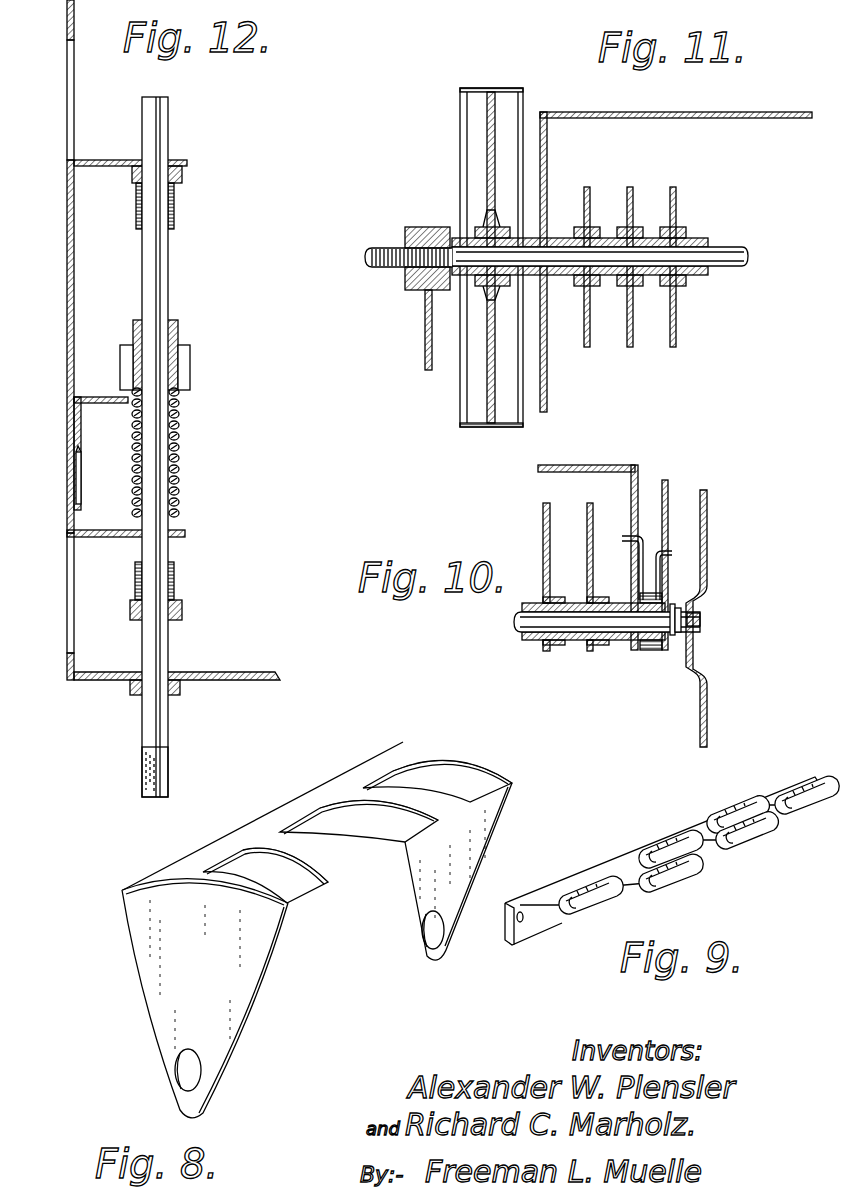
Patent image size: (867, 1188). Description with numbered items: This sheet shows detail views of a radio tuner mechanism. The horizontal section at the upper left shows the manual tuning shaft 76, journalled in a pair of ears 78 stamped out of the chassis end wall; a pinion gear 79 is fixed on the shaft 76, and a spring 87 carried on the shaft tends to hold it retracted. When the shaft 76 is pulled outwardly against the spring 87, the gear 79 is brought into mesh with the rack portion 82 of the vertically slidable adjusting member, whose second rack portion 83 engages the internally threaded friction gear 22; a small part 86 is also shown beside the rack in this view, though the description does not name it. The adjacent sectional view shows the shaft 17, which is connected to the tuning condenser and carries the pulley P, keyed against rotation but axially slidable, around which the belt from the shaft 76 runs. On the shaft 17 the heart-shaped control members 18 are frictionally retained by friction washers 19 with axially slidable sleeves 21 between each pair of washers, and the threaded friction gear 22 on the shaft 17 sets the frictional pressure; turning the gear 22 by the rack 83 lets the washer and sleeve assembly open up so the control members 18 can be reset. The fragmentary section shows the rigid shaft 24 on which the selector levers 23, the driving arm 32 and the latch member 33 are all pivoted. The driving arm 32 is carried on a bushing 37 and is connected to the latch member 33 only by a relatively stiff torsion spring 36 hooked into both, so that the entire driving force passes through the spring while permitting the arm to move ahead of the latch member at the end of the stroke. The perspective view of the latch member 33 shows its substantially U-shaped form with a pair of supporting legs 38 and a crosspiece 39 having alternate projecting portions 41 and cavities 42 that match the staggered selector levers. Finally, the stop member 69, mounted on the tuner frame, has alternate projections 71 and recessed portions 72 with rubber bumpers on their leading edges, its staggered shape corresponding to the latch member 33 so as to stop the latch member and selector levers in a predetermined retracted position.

In FIG. 11, the pulley P is at (470, 117).
In FIG. 11, the shaft 17 is at (380, 250).
In FIG. 11, the heart-shaped control members 18 is at (678, 336).
In FIG. 11, the friction washers 19 is at (681, 229).
In FIG. 11, the axially slidable sleeves 21 is at (642, 238).
In FIG. 11, the internally threaded friction gear 22 is at (424, 227).
In FIG. 10, the selector levers 23 is at (543, 516).
In FIG. 10, the rigid shaft 24 is at (700, 621).
In FIG. 10, the driving arm 32 is at (668, 491).
In FIG. 10, the latch member 33 is at (571, 465).
In FIG. 8, the latch member 33 is at (310, 773).
In FIG. 10, the torsion spring 36 is at (658, 580).
In FIG. 10, the bushing 37 is at (644, 651).
In FIG. 8, the supporting legs 38 is at (420, 891).
In FIG. 8, the crosspiece 39 is at (337, 780).
In FIG. 8, the projecting portions 41 is at (462, 764).
In FIG. 8, the cavities 42 is at (391, 770).
In FIG. 9, the stop member 69 is at (692, 809).
In FIG. 9, the projections 71 is at (808, 812).
In FIG. 9, the recessed portions 72 is at (745, 800).
In FIG. 12, the horizontally extending shaft 76 is at (152, 462).
In FIG. 12, the ears 78 is at (102, 160).
In FIG. 12, the pinion gear 79 is at (182, 346).
In FIG. 12, the rack portion 82 is at (78, 398).
In FIG. 11, the second rack portion 83 is at (425, 336).
In FIG. 12, the stop 86 is at (81, 466).
In FIG. 12, the spring 87 is at (180, 497).